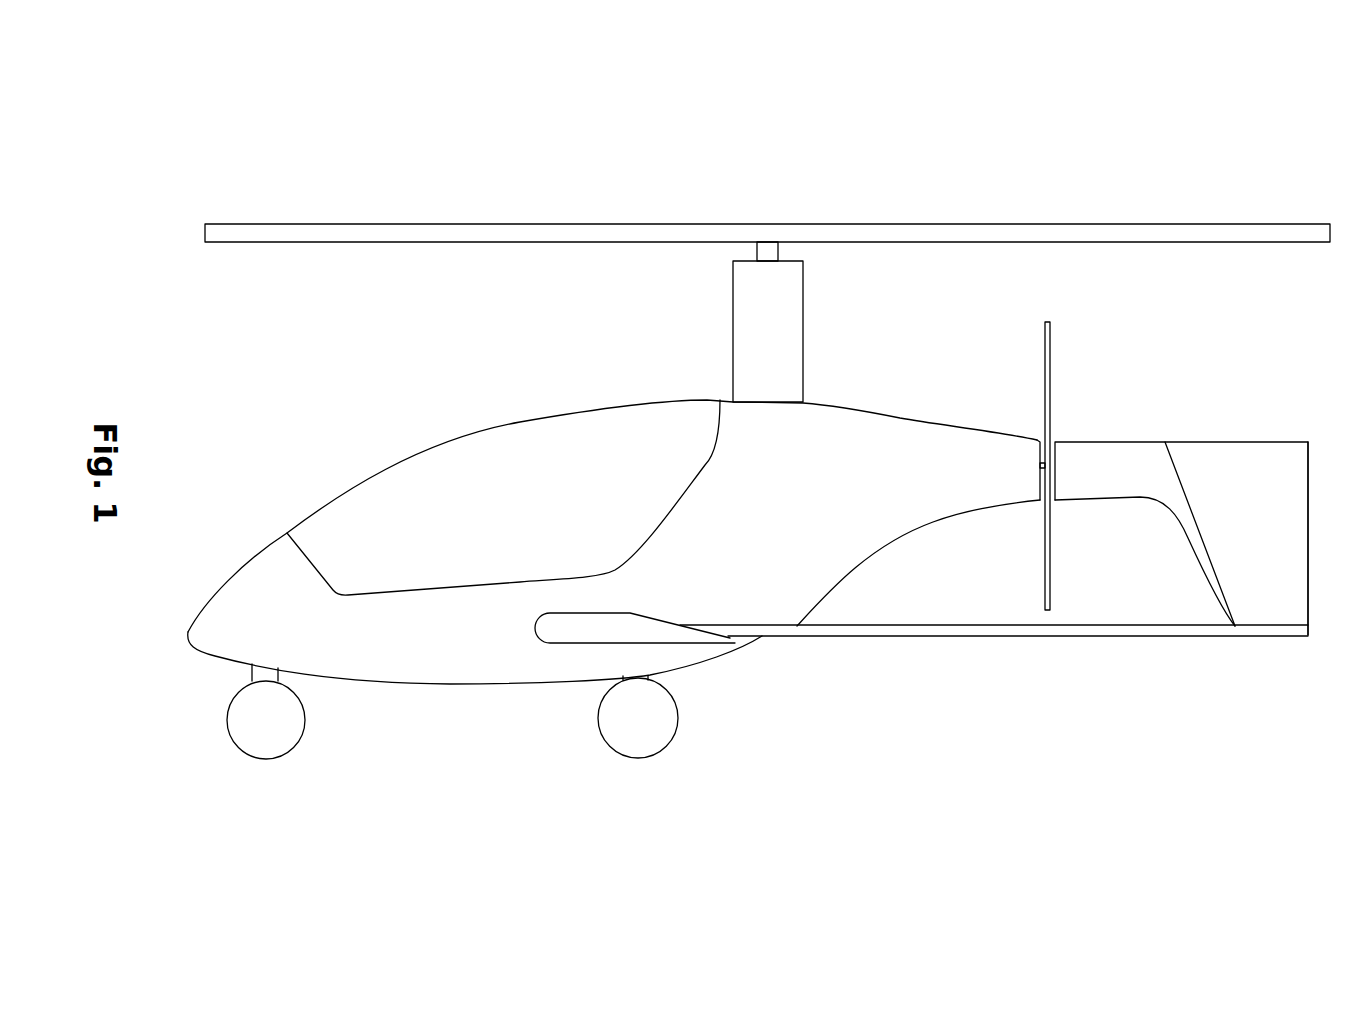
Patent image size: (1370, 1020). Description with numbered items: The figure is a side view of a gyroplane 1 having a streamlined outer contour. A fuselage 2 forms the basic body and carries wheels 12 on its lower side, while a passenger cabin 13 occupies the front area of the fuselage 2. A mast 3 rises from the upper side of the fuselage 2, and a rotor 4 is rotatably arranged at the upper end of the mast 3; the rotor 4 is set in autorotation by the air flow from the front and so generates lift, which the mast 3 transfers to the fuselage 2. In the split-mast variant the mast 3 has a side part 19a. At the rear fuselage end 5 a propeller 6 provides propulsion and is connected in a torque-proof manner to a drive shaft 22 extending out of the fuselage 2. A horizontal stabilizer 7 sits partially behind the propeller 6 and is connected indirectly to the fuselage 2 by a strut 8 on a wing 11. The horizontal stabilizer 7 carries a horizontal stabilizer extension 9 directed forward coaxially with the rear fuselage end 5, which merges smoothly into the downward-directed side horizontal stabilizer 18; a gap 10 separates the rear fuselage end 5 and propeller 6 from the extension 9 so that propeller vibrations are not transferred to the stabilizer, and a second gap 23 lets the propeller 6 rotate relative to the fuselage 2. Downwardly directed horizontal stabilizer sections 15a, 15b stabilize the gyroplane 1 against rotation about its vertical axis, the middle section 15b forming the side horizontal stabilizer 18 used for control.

The gyroplane 1 is at (318, 166).
The fuselage 2 is at (614, 630).
The mast 3 is at (707, 240).
The rotor 4 is at (767, 160).
The rear fuselage end 5 is at (926, 289).
The propeller 6 is at (989, 349).
The horizontal stabilizer 7 is at (1196, 447).
The strut 8 is at (994, 746).
The horizontal stabilizer extension 9 is at (1115, 270).
The gap 10 is at (1099, 661).
The wing 11 is at (675, 729).
The wheel 12 is at (403, 775).
The passenger cabin 13 is at (436, 460).
The horizontal stabilizer section 15a is at (1305, 624).
The middle horizontal stabilizer section 15b is at (1145, 657).
The side horizontal stabilizer 18 is at (1210, 630).
The side part 19a is at (787, 301).
The drive shaft 22 is at (1040, 465).
The second gap 23 is at (1032, 638).